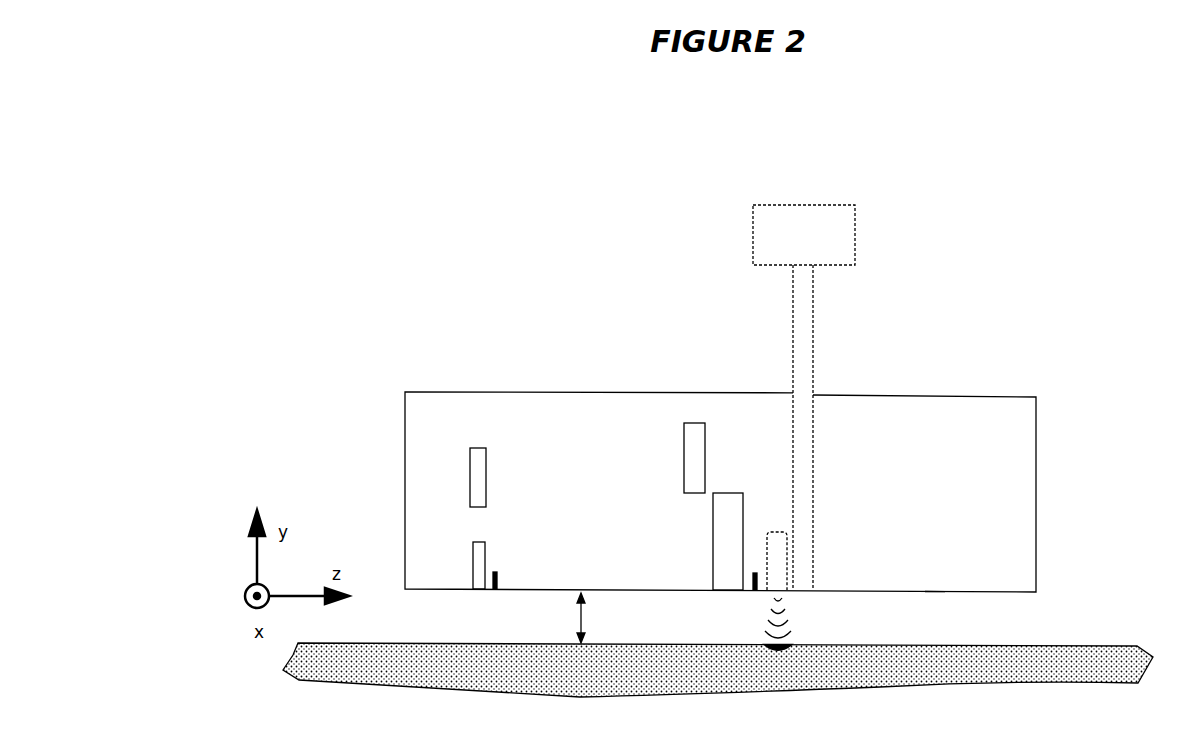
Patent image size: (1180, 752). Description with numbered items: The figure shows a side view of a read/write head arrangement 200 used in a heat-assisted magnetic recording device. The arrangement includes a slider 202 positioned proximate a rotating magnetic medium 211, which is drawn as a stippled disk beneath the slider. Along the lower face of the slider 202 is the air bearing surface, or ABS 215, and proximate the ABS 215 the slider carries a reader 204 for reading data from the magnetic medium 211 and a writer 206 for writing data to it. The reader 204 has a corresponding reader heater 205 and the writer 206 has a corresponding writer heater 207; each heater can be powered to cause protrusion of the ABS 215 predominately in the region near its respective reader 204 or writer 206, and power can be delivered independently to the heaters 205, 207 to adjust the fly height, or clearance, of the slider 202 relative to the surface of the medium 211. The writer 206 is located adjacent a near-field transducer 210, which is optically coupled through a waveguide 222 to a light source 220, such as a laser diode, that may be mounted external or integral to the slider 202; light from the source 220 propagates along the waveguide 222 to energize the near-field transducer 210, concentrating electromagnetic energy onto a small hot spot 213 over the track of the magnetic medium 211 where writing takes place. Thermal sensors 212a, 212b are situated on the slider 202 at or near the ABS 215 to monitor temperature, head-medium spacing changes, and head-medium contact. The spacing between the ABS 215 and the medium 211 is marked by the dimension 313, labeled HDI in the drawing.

The read/write head arrangement 200 is at (484, 242).
The slider 202 is at (1064, 371).
The reader 204 is at (473, 557).
The reader heater 205 is at (486, 478).
The writer 206 is at (713, 552).
The writer heater 207 is at (684, 466).
The near-field transducer 210 is at (776, 530).
The magnetic medium 211 is at (1090, 645).
The thermal sensor 212a is at (755, 591).
The thermal sensor 212b is at (492, 590).
The hot spot 213 is at (776, 653).
The ABS 215 is at (935, 593).
The light source 220 is at (856, 232).
The waveguide 222 is at (814, 333).
The head-to-disk interface spacing (HDI) 313 is at (585, 618).